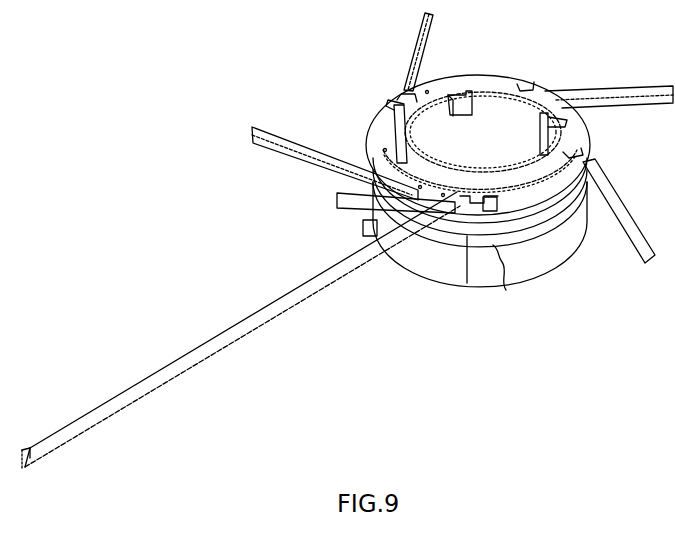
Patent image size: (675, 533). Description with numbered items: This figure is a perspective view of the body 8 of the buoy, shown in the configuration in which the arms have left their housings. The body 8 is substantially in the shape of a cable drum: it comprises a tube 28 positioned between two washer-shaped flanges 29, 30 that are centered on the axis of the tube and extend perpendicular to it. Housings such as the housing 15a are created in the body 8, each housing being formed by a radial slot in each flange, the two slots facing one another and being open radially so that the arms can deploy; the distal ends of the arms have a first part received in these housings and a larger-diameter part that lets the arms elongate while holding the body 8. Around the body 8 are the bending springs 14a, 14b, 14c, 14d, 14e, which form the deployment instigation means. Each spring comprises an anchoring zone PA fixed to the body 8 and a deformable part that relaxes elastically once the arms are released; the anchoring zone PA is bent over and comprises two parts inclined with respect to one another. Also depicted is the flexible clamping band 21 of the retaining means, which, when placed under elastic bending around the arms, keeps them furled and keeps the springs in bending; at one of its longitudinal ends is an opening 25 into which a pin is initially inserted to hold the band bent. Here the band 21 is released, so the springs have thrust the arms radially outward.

The body 8 is at (373, 117).
The bending spring 14a is at (347, 211).
The bending spring 14b is at (267, 150).
The bending spring 14c is at (427, 25).
The bending spring 14d is at (651, 87).
The bending spring 14e is at (637, 230).
The housing 15a is at (415, 185).
The flexible clamping band 21 is at (218, 343).
The opening 25 is at (24, 447).
The tube 28 is at (490, 107).
The flange 29 is at (506, 290).
The flange 30 is at (588, 123).
The anchoring zone PA is at (543, 128).